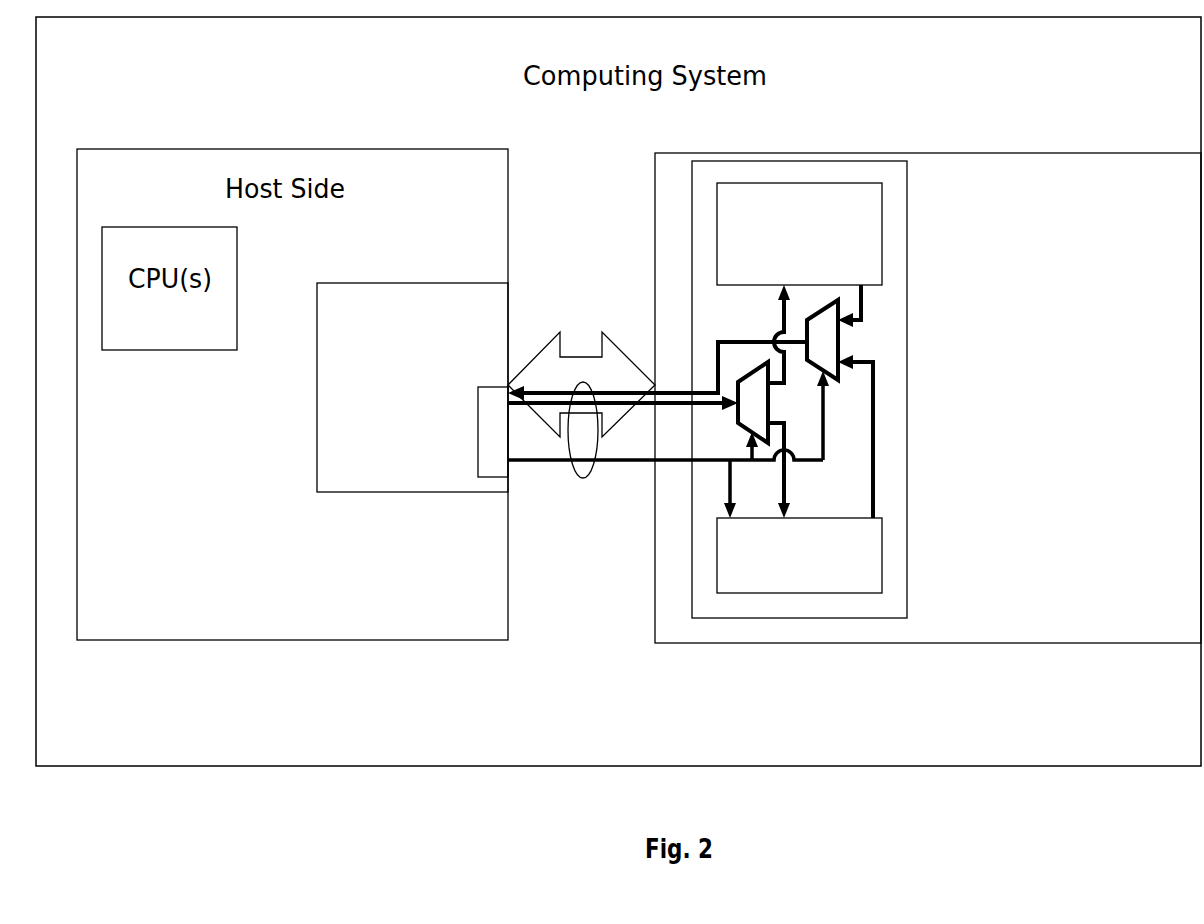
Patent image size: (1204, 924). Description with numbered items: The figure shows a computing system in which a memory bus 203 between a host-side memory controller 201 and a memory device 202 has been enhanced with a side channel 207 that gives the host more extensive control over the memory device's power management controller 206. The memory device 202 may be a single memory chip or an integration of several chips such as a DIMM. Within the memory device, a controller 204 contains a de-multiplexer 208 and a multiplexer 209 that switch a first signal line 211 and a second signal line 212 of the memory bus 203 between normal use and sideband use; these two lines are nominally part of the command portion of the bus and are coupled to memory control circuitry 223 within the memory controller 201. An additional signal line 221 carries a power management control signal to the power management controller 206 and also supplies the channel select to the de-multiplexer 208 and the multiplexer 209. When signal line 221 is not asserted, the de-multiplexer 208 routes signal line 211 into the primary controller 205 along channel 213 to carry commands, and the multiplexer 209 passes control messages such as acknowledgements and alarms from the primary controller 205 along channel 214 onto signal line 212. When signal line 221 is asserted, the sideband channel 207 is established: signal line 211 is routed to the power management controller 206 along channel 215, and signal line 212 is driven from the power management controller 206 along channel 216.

The memory controller 201 is at (433, 393).
The memory device 202 is at (1085, 222).
The memory bus 203 is at (570, 357).
The controller 204 is at (908, 432).
The primary controller 205 is at (880, 252).
The power management controller 206 is at (882, 543).
The side channel 207 is at (583, 478).
The de-multiplexer 208 is at (749, 392).
The multiplexer 209 is at (828, 337).
The first signal line 211 is at (545, 405).
The second signal line 212 is at (613, 390).
The channel 213 is at (780, 317).
The channel 214 is at (880, 307).
The channel 215 is at (788, 488).
The channel 216 is at (873, 488).
The signal line 221 is at (620, 467).
The memory control circuitry 223 is at (492, 422).